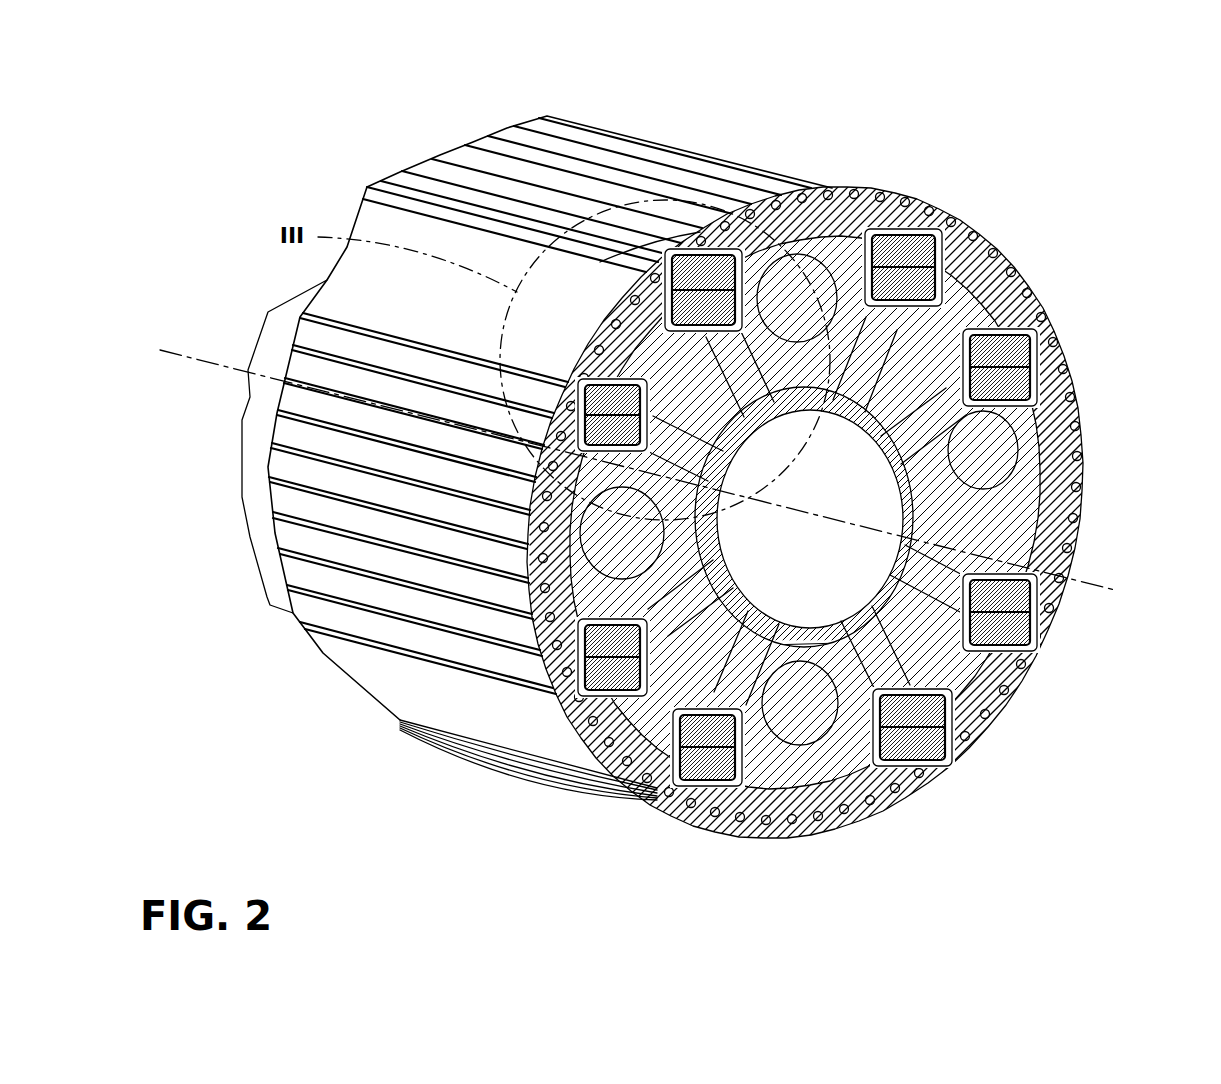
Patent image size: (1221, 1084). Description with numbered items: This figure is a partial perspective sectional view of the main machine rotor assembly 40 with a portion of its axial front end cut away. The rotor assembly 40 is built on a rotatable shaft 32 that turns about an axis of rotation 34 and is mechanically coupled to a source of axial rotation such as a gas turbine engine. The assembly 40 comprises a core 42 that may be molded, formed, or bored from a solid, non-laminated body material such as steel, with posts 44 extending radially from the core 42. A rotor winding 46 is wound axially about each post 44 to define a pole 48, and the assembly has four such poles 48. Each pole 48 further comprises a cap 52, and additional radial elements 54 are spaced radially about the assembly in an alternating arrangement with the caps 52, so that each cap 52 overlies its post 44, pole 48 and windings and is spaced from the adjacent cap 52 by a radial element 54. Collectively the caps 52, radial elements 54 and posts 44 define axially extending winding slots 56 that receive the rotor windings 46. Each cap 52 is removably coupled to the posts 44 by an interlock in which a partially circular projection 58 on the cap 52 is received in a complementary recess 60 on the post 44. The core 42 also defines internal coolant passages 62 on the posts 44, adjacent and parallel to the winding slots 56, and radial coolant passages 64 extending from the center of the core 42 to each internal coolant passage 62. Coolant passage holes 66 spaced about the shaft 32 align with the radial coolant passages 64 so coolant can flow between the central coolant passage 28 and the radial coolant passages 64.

The central coolant passage 28 is at (775, 563).
The rotatable shaft 32 is at (983, 305).
The axis of rotation 34 is at (165, 352).
The main machine rotor assembly 40 is at (255, 109).
The core 42 is at (930, 292).
The post 44 is at (762, 245).
The rotor winding 46 is at (667, 770).
The pole 48 is at (757, 155).
The cap 52 is at (742, 265).
The radial element 54 is at (362, 275).
The winding slot 56 is at (643, 252).
The projection 58 is at (808, 285).
The recess 60 is at (865, 250).
The internal coolant passage 62 is at (962, 345).
The radial coolant passage 64 is at (1007, 443).
The coolant passage hole 66 is at (1000, 520).